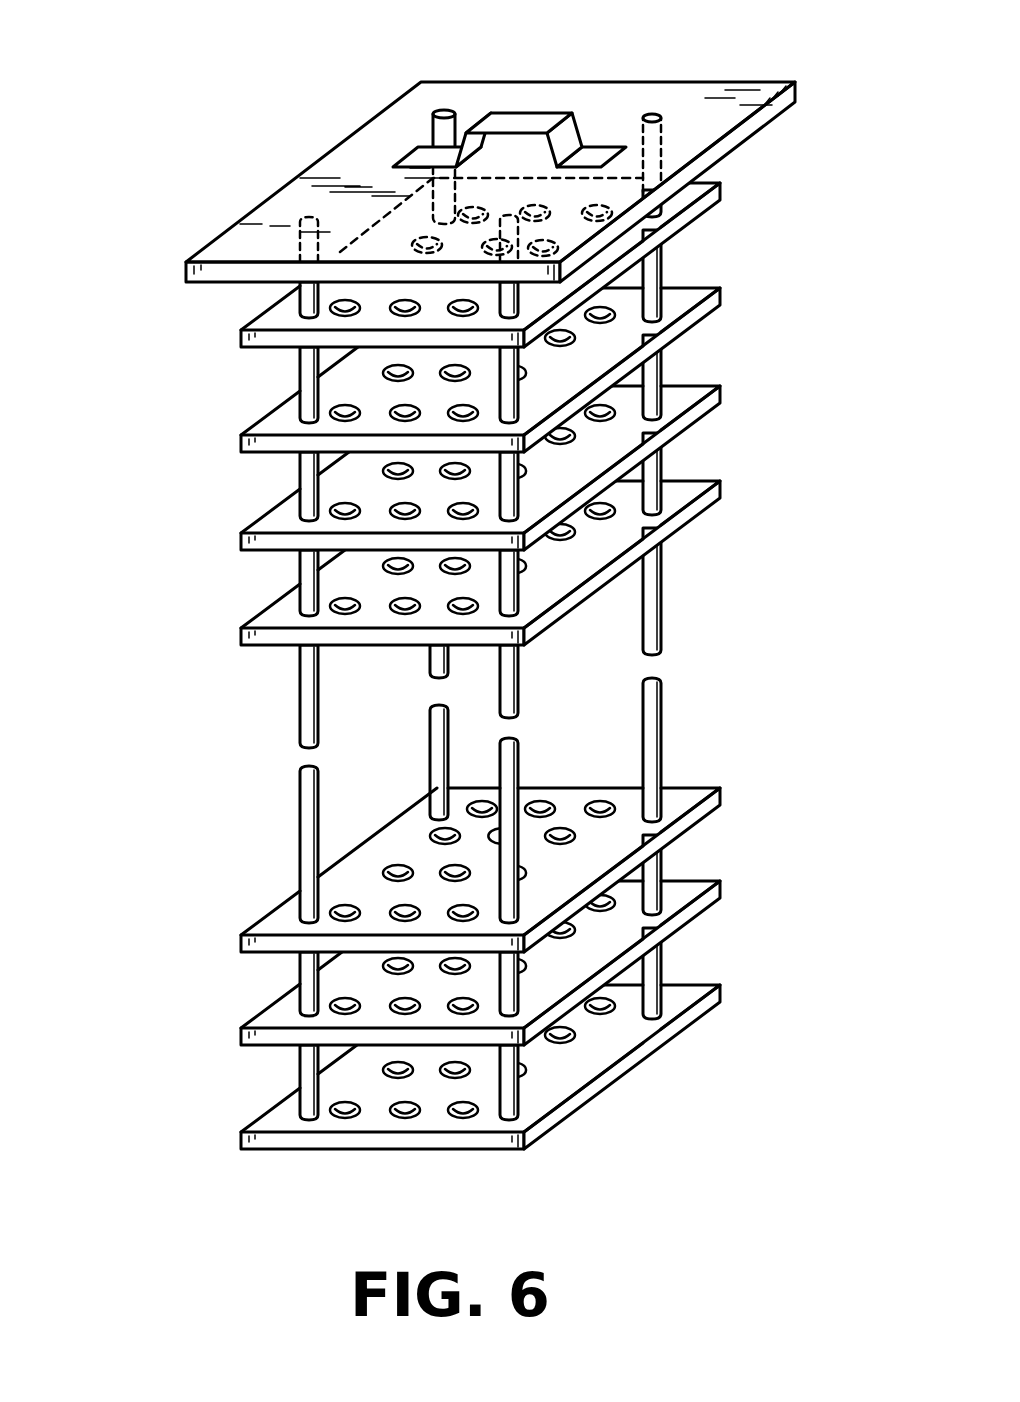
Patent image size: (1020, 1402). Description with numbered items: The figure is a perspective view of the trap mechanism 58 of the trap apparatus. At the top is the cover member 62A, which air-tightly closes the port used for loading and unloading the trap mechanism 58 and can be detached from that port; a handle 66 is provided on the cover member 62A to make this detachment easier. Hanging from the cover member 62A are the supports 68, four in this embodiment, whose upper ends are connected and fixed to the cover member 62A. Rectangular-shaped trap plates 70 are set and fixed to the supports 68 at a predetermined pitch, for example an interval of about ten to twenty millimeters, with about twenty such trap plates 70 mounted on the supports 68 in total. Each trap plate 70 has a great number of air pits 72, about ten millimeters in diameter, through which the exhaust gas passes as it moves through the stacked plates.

The trap mechanism 58 is at (203, 998).
The cover member 62A is at (705, 102).
The handle 66 is at (548, 112).
The supports 68 is at (432, 662).
The trap plates 70 is at (723, 289).
The air pits 72 is at (612, 513).